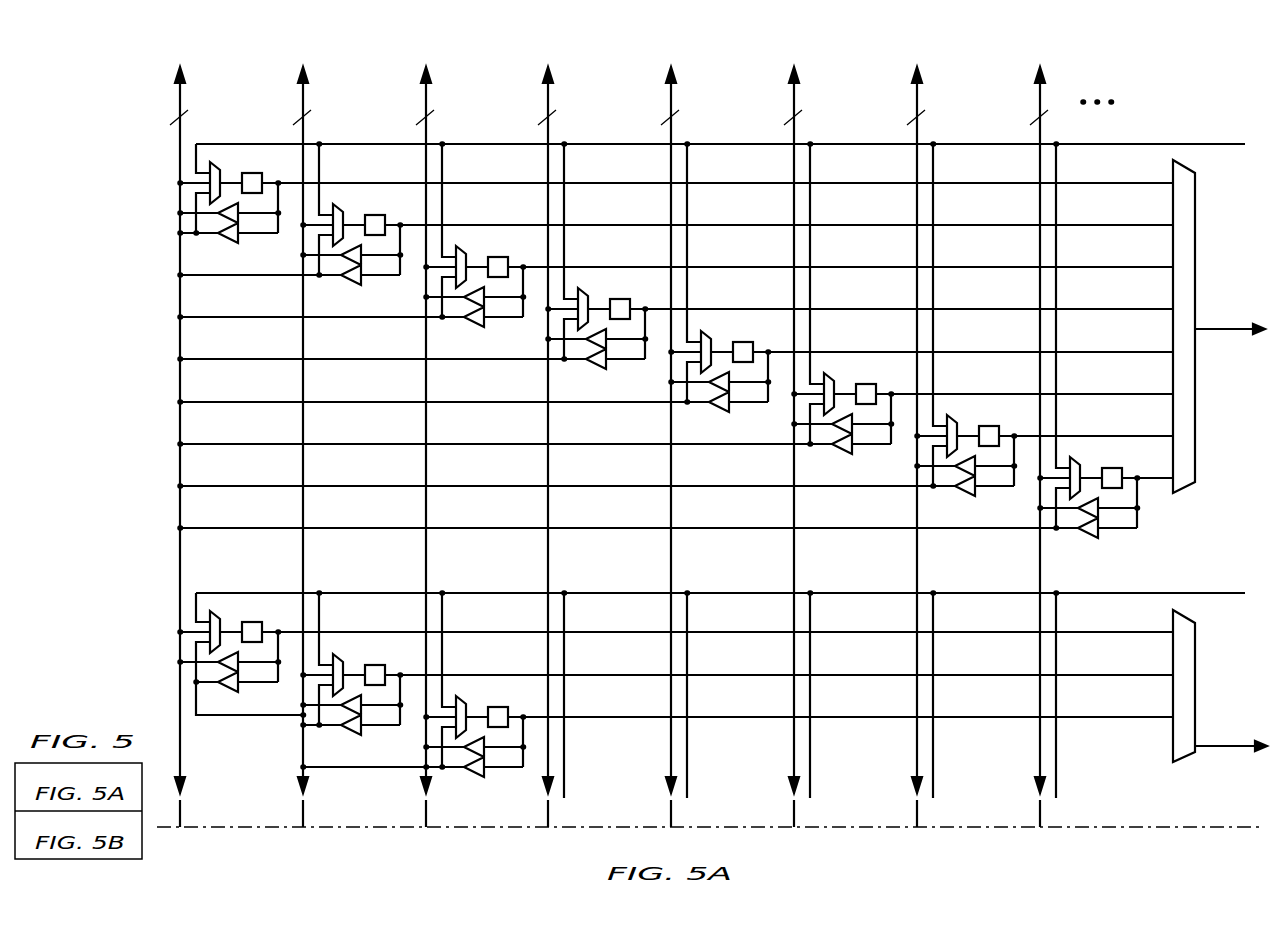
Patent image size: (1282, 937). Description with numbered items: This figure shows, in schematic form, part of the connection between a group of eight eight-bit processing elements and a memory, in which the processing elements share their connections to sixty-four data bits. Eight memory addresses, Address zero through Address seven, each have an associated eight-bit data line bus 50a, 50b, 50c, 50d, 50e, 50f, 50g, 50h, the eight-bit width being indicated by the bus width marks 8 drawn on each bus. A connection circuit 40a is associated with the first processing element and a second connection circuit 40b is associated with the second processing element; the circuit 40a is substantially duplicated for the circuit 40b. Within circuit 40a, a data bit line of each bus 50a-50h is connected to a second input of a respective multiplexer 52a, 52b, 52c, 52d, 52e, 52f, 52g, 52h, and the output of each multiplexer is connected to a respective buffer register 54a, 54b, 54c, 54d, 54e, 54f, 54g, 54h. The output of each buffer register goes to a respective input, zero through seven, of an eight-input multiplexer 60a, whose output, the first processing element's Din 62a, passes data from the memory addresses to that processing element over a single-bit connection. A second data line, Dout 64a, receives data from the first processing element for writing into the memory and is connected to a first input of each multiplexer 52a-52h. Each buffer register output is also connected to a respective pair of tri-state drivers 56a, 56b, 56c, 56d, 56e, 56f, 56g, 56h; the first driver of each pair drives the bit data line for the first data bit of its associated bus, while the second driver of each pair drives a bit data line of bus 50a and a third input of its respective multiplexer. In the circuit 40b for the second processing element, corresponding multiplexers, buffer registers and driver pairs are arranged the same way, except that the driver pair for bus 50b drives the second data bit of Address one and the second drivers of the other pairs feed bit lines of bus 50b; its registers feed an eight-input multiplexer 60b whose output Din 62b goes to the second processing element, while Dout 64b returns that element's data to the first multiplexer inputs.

The bus width indicator 8 is at (615, 119).
The connection circuit 40a is at (142, 258).
The connection circuit 40b is at (142, 650).
The data line bus 50a is at (180, 93).
The data line bus 50b is at (303, 93).
The data line bus 50c is at (426, 93).
The data line bus 50d is at (548, 93).
The data line bus 50e is at (671, 93).
The data line bus 50f is at (794, 93).
The data line bus 50g is at (917, 93).
The data line bus 50h is at (1040, 93).
The multiplexer 52a is at (216, 161).
The multiplexer 52b is at (339, 203).
The multiplexer 52c is at (462, 245).
The multiplexer 52d is at (584, 287).
The multiplexer 52e is at (707, 330).
The multiplexer 52f is at (830, 372).
The multiplexer 52g is at (953, 414).
The multiplexer 52h is at (1076, 456).
The buffer register 54a is at (243, 173).
The buffer register 54b is at (366, 215).
The buffer register 54c is at (489, 257).
The buffer register 54d is at (611, 299).
The buffer register 54e is at (734, 342).
The buffer register 54f is at (857, 384).
The buffer register 54g is at (980, 426).
The buffer register 54h is at (1103, 468).
The pair of tri-state drivers 56a is at (226, 244).
The pair of tri-state drivers 56b is at (349, 286).
The pair of tri-state drivers 56c is at (472, 328).
The pair of tri-state drivers 56d is at (594, 370).
The pair of tri-state drivers 56e is at (717, 413).
The pair of tri-state drivers 56f is at (840, 455).
The pair of tri-state drivers 56g is at (963, 497).
The pair of tri-state drivers 56h is at (1086, 539).
The eight-input multiplexer 60a is at (1197, 211).
The eight-input multiplexer 60b is at (1197, 662).
The PE0 Din output 62a is at (1222, 333).
The PE1 Din output 62b is at (1207, 748).
The PE Dout data line 64a is at (1139, 131).
The PE Dout data line 64b is at (1139, 581).